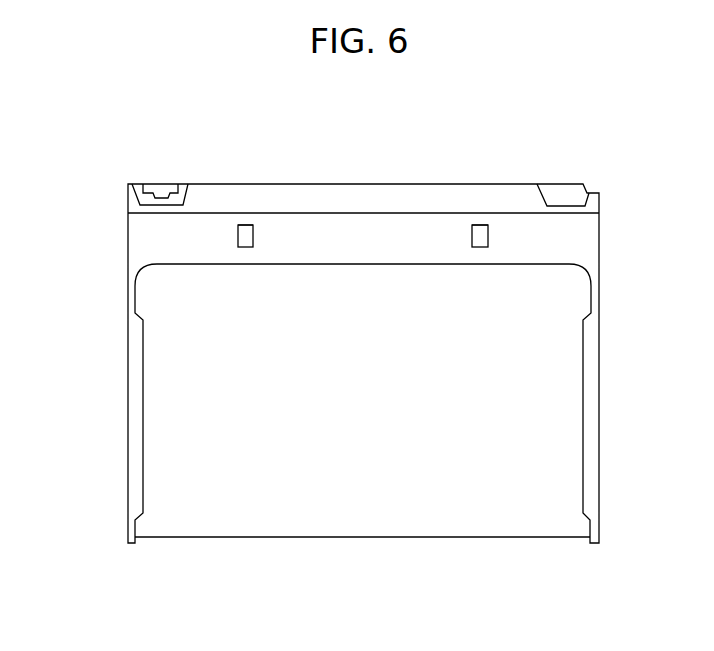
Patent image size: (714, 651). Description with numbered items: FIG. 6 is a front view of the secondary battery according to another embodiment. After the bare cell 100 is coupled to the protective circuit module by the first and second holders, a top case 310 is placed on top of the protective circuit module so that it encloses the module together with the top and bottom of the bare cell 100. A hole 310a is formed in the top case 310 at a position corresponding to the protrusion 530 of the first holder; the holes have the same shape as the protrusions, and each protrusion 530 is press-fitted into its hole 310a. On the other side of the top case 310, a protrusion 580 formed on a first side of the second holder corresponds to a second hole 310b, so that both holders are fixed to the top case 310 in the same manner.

The top case 310 is at (137, 243).
The hole 310a is at (237, 223).
The hole 310b is at (471, 223).
The protrusion 530 is at (248, 238).
The protrusion 580 is at (482, 238).
The bare cell 100 is at (377, 528).